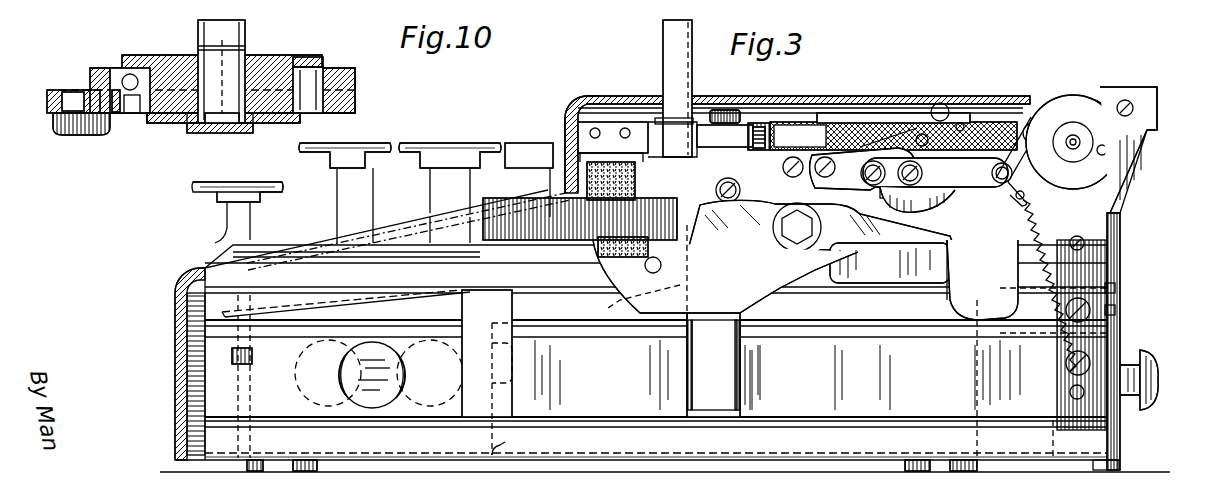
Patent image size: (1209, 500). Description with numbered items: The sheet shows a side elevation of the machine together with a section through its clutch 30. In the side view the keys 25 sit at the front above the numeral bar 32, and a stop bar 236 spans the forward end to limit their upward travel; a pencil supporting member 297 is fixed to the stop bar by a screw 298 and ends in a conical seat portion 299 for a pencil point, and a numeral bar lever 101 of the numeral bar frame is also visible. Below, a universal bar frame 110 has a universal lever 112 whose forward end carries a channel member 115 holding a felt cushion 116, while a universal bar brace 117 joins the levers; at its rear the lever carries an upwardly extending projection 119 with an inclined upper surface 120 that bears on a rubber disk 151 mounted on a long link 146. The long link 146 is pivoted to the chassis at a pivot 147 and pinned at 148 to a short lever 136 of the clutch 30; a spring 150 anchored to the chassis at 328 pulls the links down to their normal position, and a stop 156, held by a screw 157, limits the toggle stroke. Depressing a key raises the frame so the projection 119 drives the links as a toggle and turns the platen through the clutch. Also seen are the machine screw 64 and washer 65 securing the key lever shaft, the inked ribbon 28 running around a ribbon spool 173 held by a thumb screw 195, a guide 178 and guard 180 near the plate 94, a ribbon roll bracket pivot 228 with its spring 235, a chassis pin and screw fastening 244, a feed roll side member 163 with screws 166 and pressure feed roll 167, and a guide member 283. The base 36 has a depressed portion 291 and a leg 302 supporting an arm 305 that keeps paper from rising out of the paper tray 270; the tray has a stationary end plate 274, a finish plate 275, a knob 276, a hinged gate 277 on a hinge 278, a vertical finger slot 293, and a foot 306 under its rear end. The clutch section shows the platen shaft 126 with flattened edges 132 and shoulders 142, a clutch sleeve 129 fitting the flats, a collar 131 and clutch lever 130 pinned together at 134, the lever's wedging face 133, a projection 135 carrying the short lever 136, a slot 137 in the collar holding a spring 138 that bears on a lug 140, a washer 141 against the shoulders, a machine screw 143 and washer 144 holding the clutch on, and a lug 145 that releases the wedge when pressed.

In FIG. 3, the keys 25 is at (210, 200).
In FIG. 3, the inked ribbon 28 is at (962, 123).
In FIG. 10, the clutch 30 is at (313, 58).
In FIG. 3, the clutch 30 is at (1103, 100).
In FIG. 3, the numeral bar 32 is at (510, 145).
In FIG. 3, the base 36 is at (880, 412).
In FIG. 3, the machine screw 64 is at (845, 248).
In FIG. 3, the washer 65 is at (785, 240).
In FIG. 3, the plate 94 is at (835, 113).
In FIG. 3, the numeral bar lever 101 is at (572, 240).
In FIG. 3, the universal bar frame 110 is at (300, 472).
In FIG. 3, the universal lever 112 is at (725, 277).
In FIG. 3, the channel member 115 is at (654, 273).
In FIG. 3, the felt cushion 116 is at (373, 238).
In FIG. 3, the universal bar brace 117 is at (940, 288).
In FIG. 3, the projection 119 is at (958, 248).
In FIG. 3, the inclined upper surface 120 is at (925, 205).
In FIG. 10, the platen shaft 126 is at (242, 34).
In FIG. 10, the clutch sleeve 129 is at (240, 134).
In FIG. 3, the clutch sleeve 129 is at (1095, 142).
In FIG. 10, the clutch lever 130 is at (353, 97).
In FIG. 3, the clutch lever 130 is at (1118, 200).
In FIG. 10, the collar 131 is at (357, 78).
In FIG. 10, the flattened edges 132 is at (183, 120).
In FIG. 3, the wedging face 133 is at (1120, 165).
In FIG. 10, the pin 134 is at (318, 113).
In FIG. 10, the projection 135 is at (100, 80).
In FIG. 10, the short lever 136 is at (77, 136).
In FIG. 3, the short lever 136 is at (1027, 185).
In FIG. 10, the slot 137 is at (113, 78).
In FIG. 10, the spring 138 is at (130, 72).
In FIG. 10, the lug 140 is at (132, 128).
In FIG. 10, the washer 141 is at (325, 62).
In FIG. 10, the shoulders 142 is at (200, 47).
In FIG. 10, the machine screw 143 is at (210, 133).
In FIG. 10, the washer 144 is at (273, 123).
In FIG. 3, the lug 145 is at (1070, 95).
In FIG. 3, the long link 146 is at (968, 175).
In FIG. 3, the pivot 147 is at (868, 205).
In FIG. 3, the pin 148 is at (1005, 185).
In FIG. 3, the spring 150 is at (1030, 215).
In FIG. 3, the rubber disk 151 is at (873, 187).
In FIG. 3, the stop 156 is at (938, 103).
In FIG. 3, the screw 157 is at (843, 163).
In FIG. 3, the side member 163 is at (1108, 152).
In FIG. 3, the screws 166 is at (1167, 88).
In FIG. 3, the pressure feed roll 167 is at (1135, 102).
In FIG. 3, the ribbon spool 173 is at (688, 118).
In FIG. 3, the guide 178 is at (920, 135).
In FIG. 3, the guard 180 is at (1026, 120).
In FIG. 3, the thumb screw 195 is at (727, 110).
In FIG. 3, the pivot 228 is at (762, 123).
In FIG. 3, the spring 235 is at (893, 136).
In FIG. 3, the stop bar 236 is at (578, 155).
In FIG. 3, the pin and screw fastening 244 is at (732, 147).
In FIG. 3, the paper tray 270 is at (805, 383).
In FIG. 3, the stationary end plate 274 is at (1115, 310).
In FIG. 3, the finish plate 275 is at (1122, 250).
In FIG. 3, the knob 276 is at (1150, 352).
In FIG. 3, the hinged gate 277 is at (500, 445).
In FIG. 3, the hinge 278 is at (232, 355).
In FIG. 3, the guide member 283 is at (1115, 287).
In FIG. 3, the depressed portion 291 is at (567, 462).
In FIG. 3, the vertical finger slot 293 is at (980, 370).
In FIG. 3, the pencil supporting member 297 is at (645, 150).
In FIG. 3, the screw 298 is at (566, 112).
In FIG. 3, the seat portion 299 is at (721, 203).
In FIG. 3, the leg 302 is at (512, 380).
In FIG. 3, the arm 305 is at (400, 293).
In FIG. 3, the foot 306 is at (1120, 465).
In FIG. 3, the spring anchor point 328 is at (1070, 395).